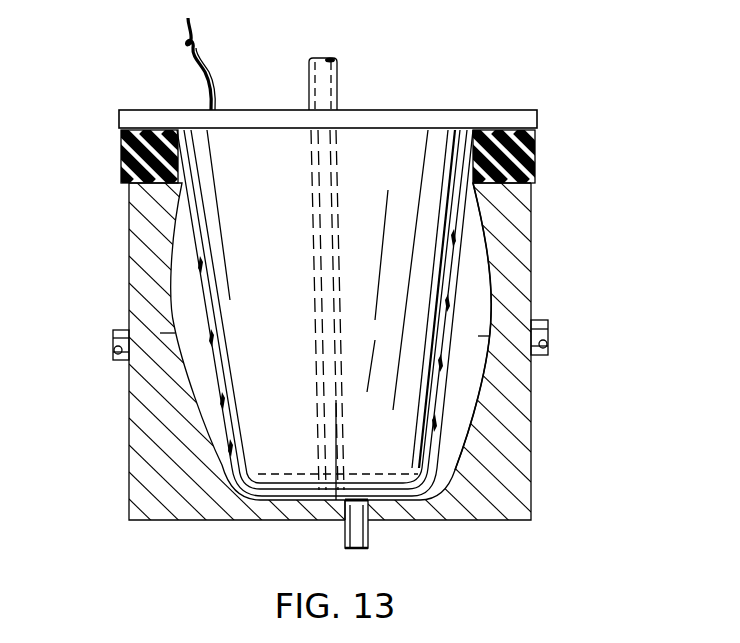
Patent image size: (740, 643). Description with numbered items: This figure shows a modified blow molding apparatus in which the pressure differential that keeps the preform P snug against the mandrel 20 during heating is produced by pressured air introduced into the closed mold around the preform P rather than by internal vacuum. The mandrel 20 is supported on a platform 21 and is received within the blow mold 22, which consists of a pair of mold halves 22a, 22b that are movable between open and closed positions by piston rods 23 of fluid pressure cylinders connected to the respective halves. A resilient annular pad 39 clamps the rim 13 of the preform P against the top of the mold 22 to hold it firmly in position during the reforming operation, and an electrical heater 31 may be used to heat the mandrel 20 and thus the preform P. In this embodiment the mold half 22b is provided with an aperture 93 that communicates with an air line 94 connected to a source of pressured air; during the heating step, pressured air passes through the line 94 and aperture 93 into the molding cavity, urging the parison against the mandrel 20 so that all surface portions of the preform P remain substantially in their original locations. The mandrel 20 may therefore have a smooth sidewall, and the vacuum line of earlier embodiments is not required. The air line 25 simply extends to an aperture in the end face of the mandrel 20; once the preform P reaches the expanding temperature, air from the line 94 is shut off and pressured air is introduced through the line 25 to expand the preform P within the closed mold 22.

The rim 13 is at (463, 178).
The mandrel 20 is at (278, 160).
The platform 21 is at (474, 110).
The blow mold 22 is at (356, 328).
The mold half 22a is at (129, 508).
The mold half 22b is at (531, 508).
The piston rod 23 is at (120, 330).
The air line 25 is at (326, 58).
The electrical heater 31 is at (197, 74).
The annular pad 39 is at (537, 158).
The aperture 93 is at (357, 508).
The air line 94 is at (345, 540).
The preform P is at (457, 296).